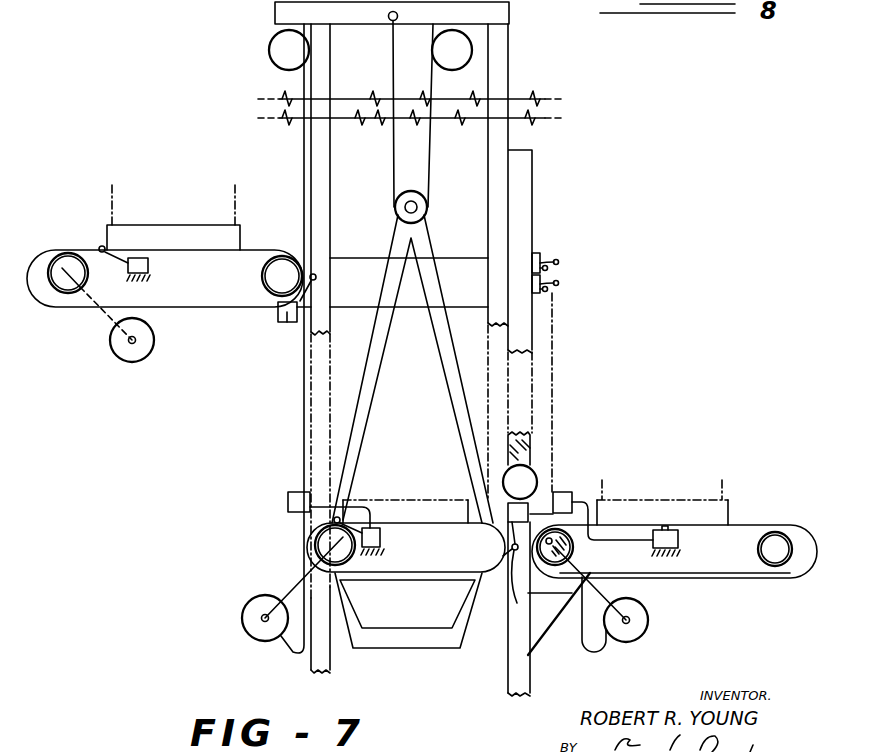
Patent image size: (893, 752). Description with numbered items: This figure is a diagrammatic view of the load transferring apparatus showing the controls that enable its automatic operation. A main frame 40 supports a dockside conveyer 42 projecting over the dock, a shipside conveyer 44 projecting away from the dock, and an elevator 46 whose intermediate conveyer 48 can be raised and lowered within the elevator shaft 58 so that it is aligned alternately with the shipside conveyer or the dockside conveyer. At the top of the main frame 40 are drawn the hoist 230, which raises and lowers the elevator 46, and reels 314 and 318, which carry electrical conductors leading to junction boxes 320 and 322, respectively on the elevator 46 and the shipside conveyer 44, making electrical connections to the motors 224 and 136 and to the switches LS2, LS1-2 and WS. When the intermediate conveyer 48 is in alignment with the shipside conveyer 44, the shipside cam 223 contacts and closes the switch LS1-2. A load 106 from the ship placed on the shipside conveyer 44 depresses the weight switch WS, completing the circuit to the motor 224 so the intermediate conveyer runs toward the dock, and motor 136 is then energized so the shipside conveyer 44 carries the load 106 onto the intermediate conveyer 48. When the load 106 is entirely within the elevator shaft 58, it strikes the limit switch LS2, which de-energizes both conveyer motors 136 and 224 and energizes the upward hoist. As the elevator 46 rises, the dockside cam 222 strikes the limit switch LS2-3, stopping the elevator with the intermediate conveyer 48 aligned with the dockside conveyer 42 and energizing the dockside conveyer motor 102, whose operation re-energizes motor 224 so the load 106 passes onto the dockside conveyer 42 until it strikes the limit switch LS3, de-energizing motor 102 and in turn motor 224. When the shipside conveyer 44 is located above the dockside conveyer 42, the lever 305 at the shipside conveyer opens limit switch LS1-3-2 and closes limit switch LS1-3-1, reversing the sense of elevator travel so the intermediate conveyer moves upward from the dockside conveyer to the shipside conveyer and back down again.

The main frame 40 is at (508, 70).
The reel 314 is at (270, 50).
The hoist 230 is at (471, 50).
The elevator 46 is at (398, 240).
The elevator shaft 58 is at (347, 357).
The dockside conveyer 42 is at (80, 250).
The load 106 is at (182, 232).
The limit switch LS3 is at (148, 267).
The dockside conveyer motor 102 is at (155, 351).
The limit switch LS2-3 is at (286, 322).
The limit switch LS1-3-1 is at (549, 262).
The limit switch LS1-3-2 is at (550, 286).
The junction box 320 is at (288, 494).
The intermediate conveyer 48 is at (412, 574).
The dockside cam 222 is at (315, 545).
The limit switch LS2 is at (380, 540).
The motor 224 is at (250, 625).
The reel 318 is at (533, 475).
The limit switch LS1-2 is at (508, 508).
The junction box 322 is at (570, 494).
The shipside conveyer 44 is at (757, 524).
The lever 305 is at (574, 549).
The weight switch WS is at (678, 540).
The shipside cam 223 is at (572, 593).
The motor 136 is at (650, 630).